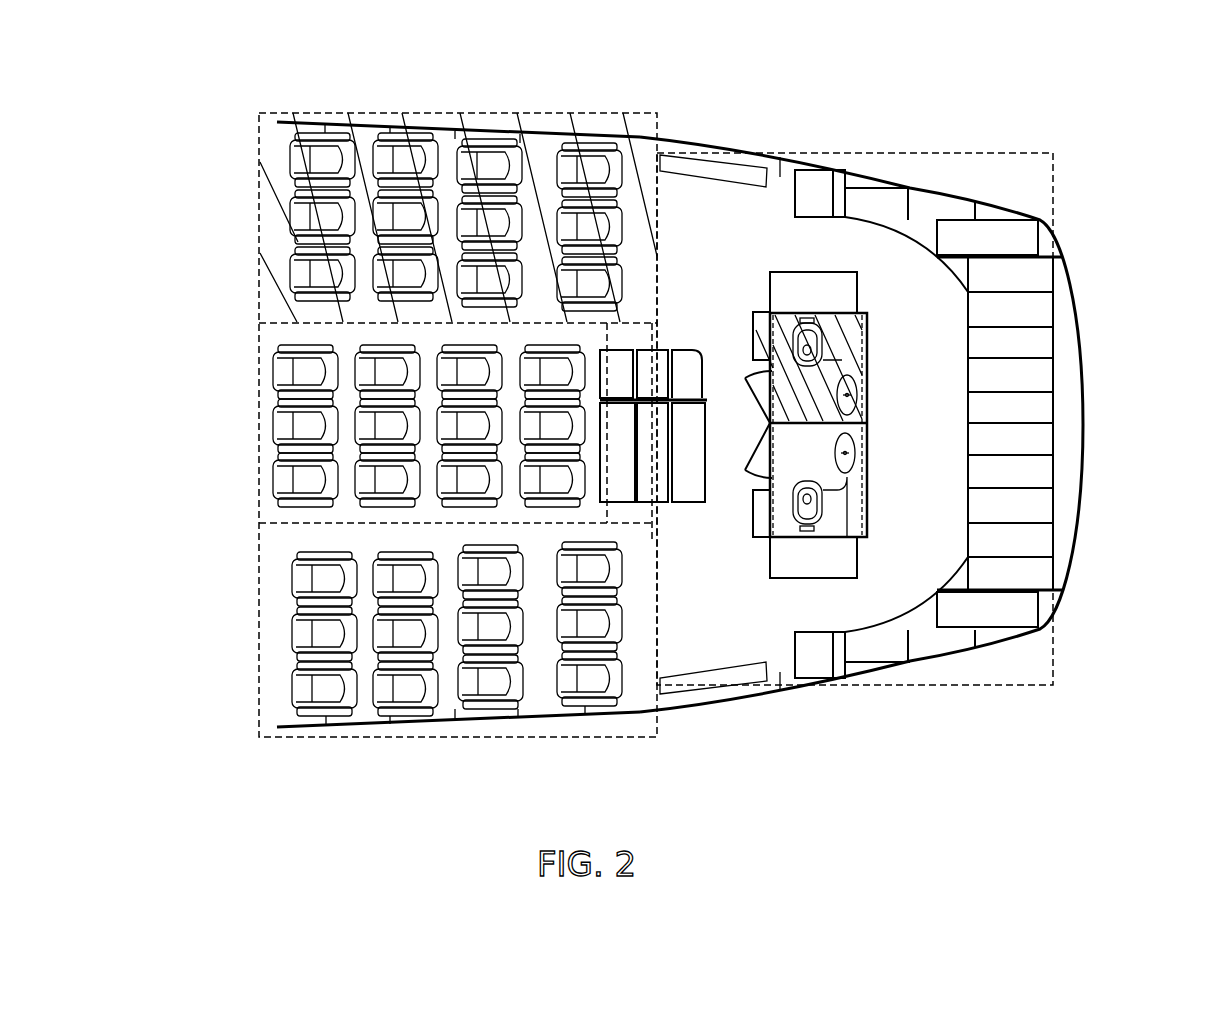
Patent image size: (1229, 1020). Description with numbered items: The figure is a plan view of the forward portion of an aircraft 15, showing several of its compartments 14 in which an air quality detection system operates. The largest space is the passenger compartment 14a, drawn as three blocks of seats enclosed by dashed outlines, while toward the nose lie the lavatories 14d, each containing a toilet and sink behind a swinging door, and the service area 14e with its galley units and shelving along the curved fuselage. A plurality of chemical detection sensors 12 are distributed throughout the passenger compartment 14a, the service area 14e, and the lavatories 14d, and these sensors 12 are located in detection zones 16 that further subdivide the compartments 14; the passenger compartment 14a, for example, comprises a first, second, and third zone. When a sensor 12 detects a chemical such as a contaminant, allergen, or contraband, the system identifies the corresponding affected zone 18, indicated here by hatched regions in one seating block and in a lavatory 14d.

The chemical detection sensor 12 is at (417, 150).
The compartment 14 is at (900, 403).
The passenger compartment 14a is at (230, 140).
The lavatory 14d is at (852, 478).
The service area 14e is at (712, 200).
The aircraft 15 is at (918, 183).
The detection zone 16 is at (278, 552).
The affected zone 18 is at (267, 240).